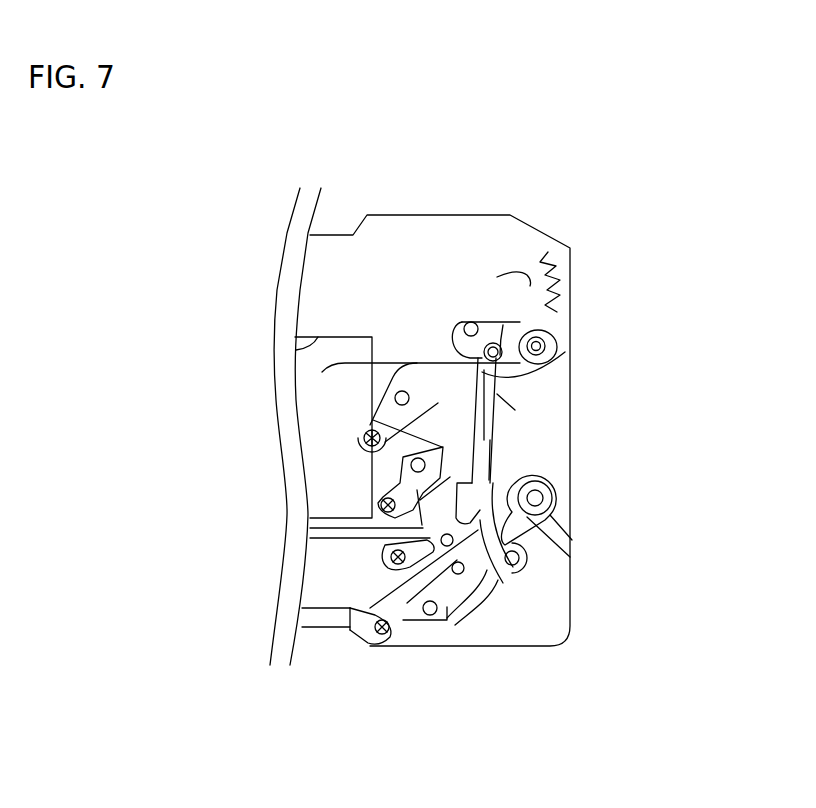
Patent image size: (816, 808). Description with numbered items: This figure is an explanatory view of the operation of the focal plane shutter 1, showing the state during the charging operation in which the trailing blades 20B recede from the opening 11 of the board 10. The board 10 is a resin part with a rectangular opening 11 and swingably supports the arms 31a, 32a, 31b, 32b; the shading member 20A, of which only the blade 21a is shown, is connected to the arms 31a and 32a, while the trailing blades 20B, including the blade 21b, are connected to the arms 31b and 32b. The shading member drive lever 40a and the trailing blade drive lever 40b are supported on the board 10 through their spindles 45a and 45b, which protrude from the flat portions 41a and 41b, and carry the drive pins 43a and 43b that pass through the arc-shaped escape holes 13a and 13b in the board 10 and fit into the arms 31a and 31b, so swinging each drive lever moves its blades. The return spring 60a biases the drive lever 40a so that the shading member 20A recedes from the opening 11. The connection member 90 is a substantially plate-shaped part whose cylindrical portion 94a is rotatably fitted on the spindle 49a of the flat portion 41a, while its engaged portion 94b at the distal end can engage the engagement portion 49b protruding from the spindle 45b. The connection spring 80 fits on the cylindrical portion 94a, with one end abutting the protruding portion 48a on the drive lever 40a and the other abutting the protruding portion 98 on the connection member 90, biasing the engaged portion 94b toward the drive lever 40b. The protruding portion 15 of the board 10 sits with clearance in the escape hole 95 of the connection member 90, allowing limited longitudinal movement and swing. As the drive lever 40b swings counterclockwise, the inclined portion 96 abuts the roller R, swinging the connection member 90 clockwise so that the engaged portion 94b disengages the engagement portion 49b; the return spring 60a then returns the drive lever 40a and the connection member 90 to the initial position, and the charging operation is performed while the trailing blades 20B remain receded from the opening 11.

The focal plane shutter 1 is at (548, 197).
The board 10 is at (307, 632).
The opening 11 is at (316, 338).
The escape hole 13a is at (503, 325).
The escape hole 13b is at (503, 620).
The protruding portion 15 is at (503, 443).
The shading member 20A is at (340, 447).
The trailing blades 20B is at (350, 610).
The blade 21a is at (340, 477).
The blade 21b is at (328, 595).
The arm 31a is at (345, 410).
The arm 31b is at (448, 620).
The arm 32a is at (358, 433).
The arm 32b is at (397, 632).
The shading member drive lever 40a is at (556, 278).
The trailing blade drive lever 40b is at (485, 593).
The flat portion 41a is at (530, 318).
The flat portion 41b is at (535, 552).
The drive pin 43a is at (458, 343).
The drive pin 43b is at (522, 572).
The spindle 45a is at (550, 333).
The spindle 45b is at (540, 524).
The protruding portion 48a is at (497, 343).
The spindle 49a is at (546, 345).
The engagement portion 49b is at (552, 496).
The return spring 60a is at (543, 315).
The connection spring 80 is at (322, 372).
The connection member 90 is at (505, 465).
The cylindrical portion 94a is at (493, 340).
The engaged portion 94b is at (525, 550).
The escape hole 95 is at (497, 453).
The inclined portion 96 is at (505, 394).
The protruding portion 98 is at (540, 372).
The roller R is at (527, 412).